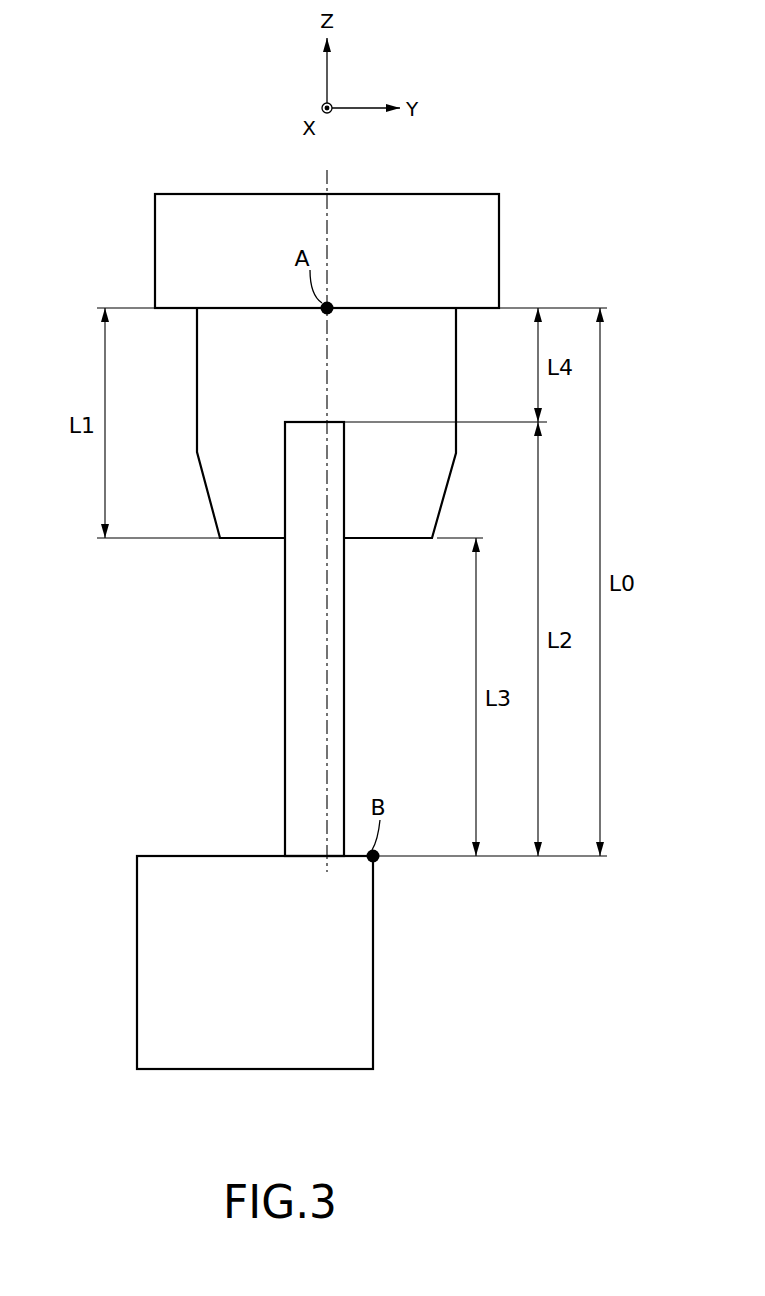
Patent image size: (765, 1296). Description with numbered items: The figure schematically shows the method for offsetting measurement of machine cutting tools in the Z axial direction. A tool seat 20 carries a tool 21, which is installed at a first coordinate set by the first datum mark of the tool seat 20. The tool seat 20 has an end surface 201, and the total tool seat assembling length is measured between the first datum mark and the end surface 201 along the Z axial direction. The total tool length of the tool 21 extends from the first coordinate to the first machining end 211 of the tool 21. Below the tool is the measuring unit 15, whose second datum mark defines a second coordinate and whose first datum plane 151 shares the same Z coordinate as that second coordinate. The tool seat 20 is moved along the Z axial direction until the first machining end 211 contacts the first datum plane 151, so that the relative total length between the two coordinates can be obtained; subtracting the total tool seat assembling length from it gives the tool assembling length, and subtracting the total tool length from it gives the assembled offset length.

The tool seat 20 is at (170, 252).
The end surface of the tool seat 201 is at (391, 540).
The tool 21 is at (298, 712).
The first machining end of the tool 211 is at (313, 857).
The measuring unit 15 is at (148, 960).
The first datum plane 151 is at (200, 855).